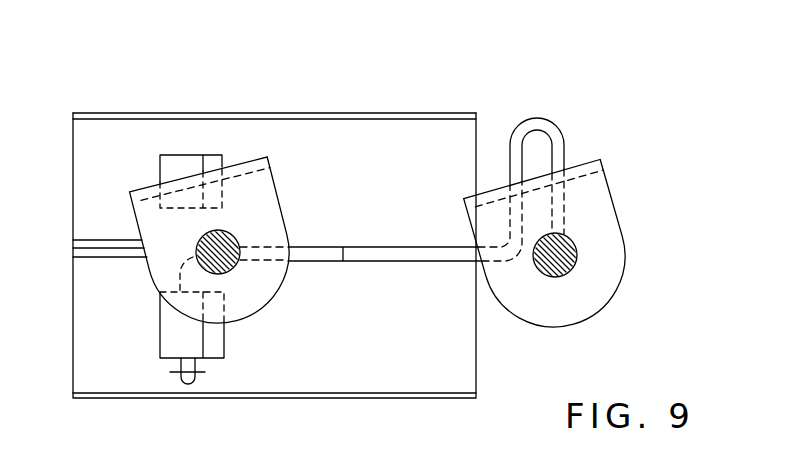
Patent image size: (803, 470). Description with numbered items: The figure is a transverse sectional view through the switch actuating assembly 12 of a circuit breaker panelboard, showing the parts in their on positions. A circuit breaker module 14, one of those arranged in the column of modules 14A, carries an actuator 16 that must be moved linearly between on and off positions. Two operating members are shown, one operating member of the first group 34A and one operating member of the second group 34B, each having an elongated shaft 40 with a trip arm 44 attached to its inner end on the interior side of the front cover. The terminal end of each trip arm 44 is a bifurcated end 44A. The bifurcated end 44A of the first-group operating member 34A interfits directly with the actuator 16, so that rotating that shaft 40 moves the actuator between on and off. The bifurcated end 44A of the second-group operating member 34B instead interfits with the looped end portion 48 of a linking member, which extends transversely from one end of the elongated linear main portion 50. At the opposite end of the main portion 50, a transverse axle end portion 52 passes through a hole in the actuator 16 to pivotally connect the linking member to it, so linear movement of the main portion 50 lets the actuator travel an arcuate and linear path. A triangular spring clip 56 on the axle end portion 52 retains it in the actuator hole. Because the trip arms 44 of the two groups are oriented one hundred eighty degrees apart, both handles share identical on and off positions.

The switch actuating assembly 12 is at (474, 93).
The circuit breaker module 14 is at (407, 113).
The column of modules 14A is at (376, 105).
The actuator 16 is at (183, 156).
The operating member of the first group 34A is at (263, 138).
The operating member of the second group 34B is at (594, 120).
The shaft 40 is at (229, 272).
The trip arm 44 is at (286, 203).
The bifurcated end 44A is at (248, 158).
The looped end portion 48 is at (555, 122).
The main portion 50 is at (370, 262).
The axle end portion 52 is at (187, 386).
The spring clip 56 is at (178, 375).